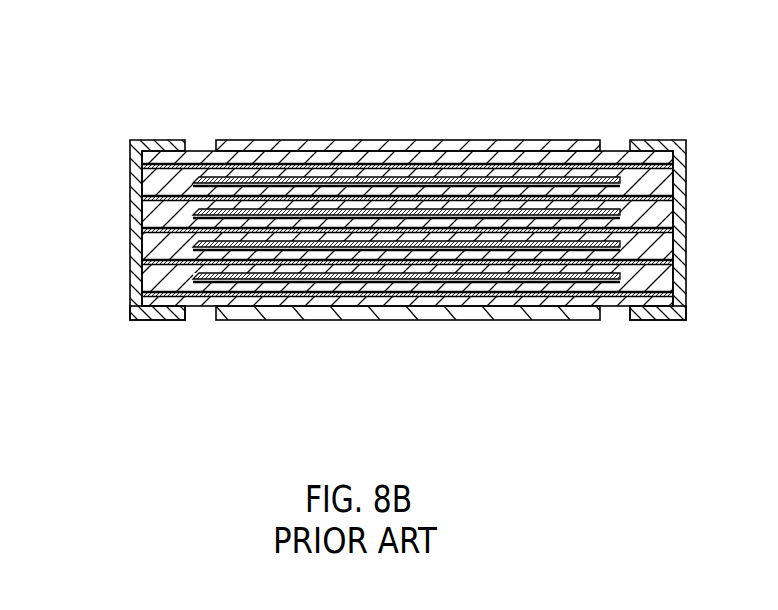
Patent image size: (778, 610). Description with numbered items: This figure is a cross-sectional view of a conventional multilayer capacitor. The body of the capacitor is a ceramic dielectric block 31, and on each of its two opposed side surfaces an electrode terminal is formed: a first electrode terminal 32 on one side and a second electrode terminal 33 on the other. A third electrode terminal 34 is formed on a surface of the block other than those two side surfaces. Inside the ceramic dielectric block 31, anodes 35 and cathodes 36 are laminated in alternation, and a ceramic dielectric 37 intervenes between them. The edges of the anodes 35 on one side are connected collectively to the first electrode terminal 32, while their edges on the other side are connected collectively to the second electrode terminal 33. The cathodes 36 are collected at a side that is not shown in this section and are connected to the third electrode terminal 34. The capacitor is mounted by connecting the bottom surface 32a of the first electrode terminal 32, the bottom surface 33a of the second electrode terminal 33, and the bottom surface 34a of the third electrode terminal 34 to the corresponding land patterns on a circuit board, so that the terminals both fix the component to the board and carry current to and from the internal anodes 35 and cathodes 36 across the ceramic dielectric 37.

The ceramic dielectric block 31 is at (612, 151).
The first electrode terminal 32 is at (130, 215).
The bottom surface of the first electrode terminal 32a is at (155, 328).
The second electrode terminal 33 is at (652, 148).
The bottom surface of the second electrode terminal 33a is at (665, 328).
The third electrode terminal 34 is at (380, 140).
The bottom surface of the third electrode terminal 34a is at (375, 328).
The anodes 35 is at (608, 300).
The cathodes 36 is at (243, 278).
The ceramic dielectric 37 is at (477, 306).